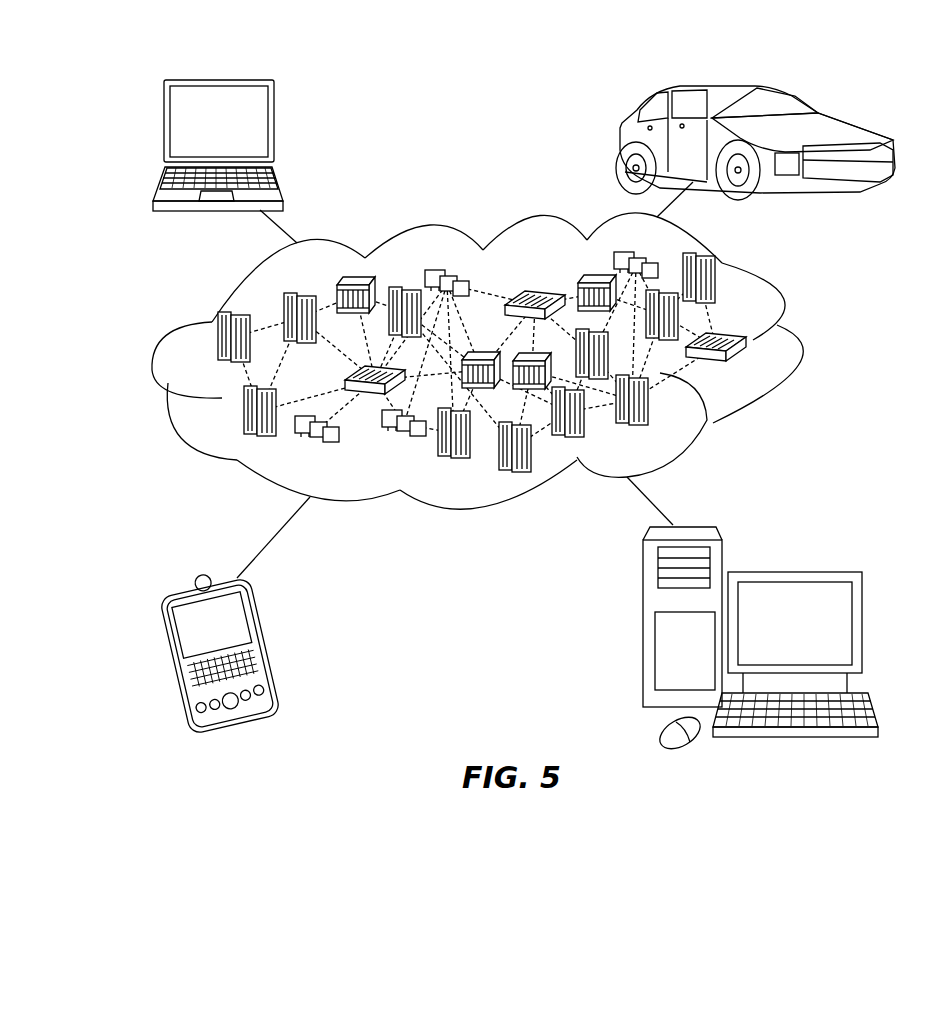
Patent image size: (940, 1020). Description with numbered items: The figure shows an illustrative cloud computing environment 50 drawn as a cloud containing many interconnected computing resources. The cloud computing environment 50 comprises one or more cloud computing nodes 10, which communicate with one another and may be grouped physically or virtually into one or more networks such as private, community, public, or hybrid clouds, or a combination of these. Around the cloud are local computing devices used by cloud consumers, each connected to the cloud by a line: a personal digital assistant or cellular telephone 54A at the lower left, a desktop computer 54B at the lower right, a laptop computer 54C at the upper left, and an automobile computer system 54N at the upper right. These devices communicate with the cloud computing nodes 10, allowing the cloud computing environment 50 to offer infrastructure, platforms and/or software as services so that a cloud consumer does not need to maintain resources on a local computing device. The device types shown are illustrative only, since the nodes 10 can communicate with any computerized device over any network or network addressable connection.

The cloud computing environment 50 is at (790, 343).
The cloud computing node 10 is at (750, 368).
The personal digital assistant or cellular telephone 54A is at (266, 650).
The desktop computer 54B is at (793, 572).
The laptop computer 54C is at (275, 130).
The automobile computer system 54N is at (616, 141).